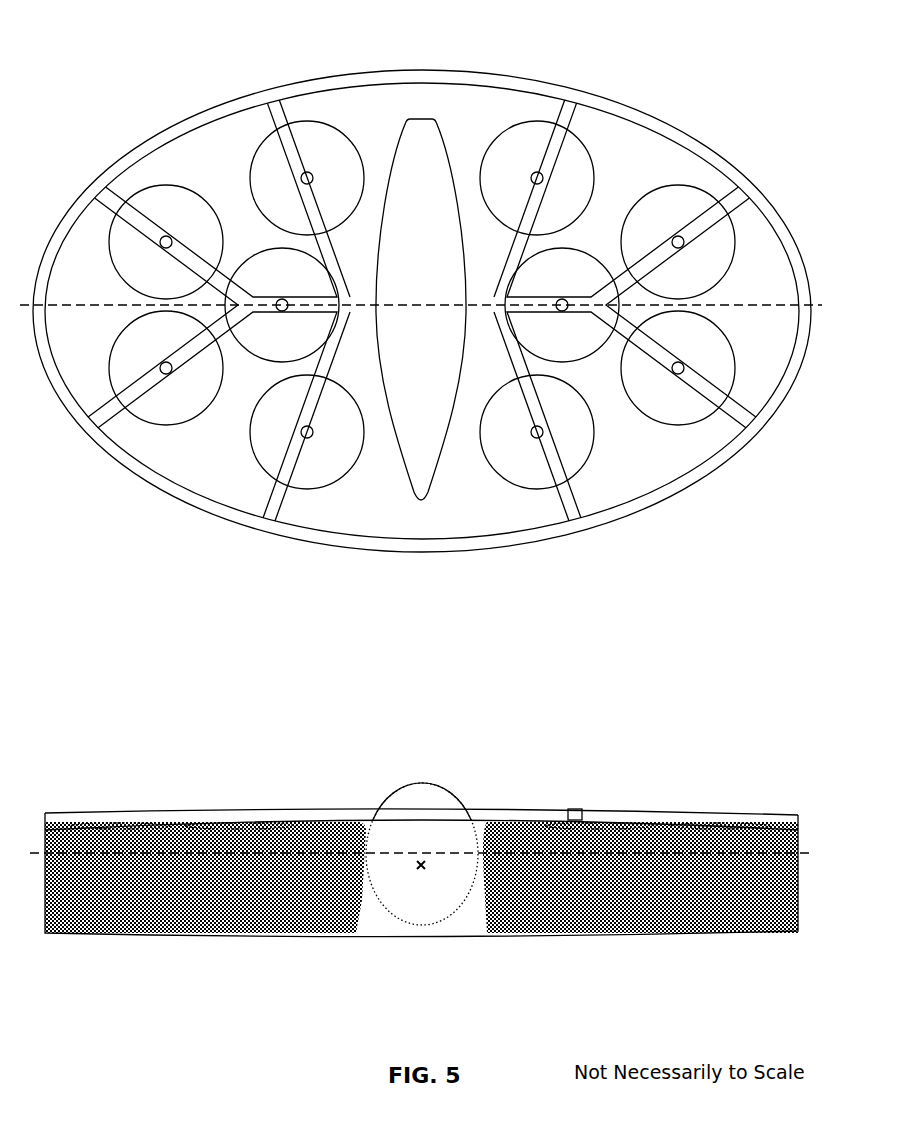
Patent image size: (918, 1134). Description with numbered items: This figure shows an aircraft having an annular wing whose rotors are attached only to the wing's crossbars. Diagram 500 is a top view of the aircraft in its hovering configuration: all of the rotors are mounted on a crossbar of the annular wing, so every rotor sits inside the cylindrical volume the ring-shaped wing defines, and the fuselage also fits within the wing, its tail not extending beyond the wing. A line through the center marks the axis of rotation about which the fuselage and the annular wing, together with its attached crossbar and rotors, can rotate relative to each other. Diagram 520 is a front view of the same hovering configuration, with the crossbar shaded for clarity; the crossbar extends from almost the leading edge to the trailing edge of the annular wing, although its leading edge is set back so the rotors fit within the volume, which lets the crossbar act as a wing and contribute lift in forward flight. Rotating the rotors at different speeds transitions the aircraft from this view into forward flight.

The diagram 500 is at (674, 40).
The diagram 520 is at (674, 716).